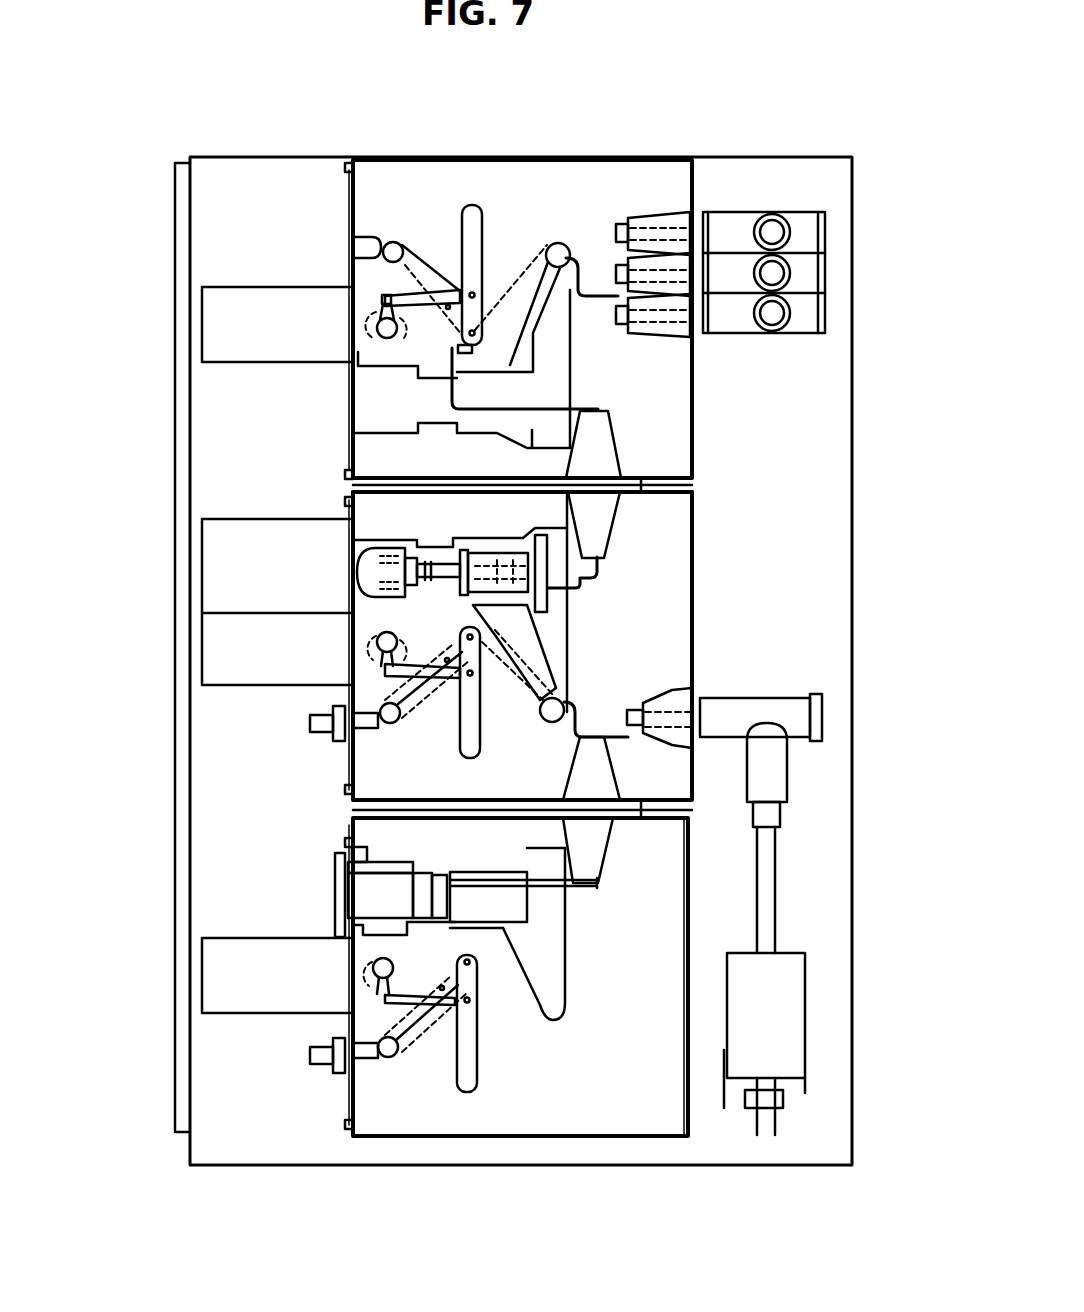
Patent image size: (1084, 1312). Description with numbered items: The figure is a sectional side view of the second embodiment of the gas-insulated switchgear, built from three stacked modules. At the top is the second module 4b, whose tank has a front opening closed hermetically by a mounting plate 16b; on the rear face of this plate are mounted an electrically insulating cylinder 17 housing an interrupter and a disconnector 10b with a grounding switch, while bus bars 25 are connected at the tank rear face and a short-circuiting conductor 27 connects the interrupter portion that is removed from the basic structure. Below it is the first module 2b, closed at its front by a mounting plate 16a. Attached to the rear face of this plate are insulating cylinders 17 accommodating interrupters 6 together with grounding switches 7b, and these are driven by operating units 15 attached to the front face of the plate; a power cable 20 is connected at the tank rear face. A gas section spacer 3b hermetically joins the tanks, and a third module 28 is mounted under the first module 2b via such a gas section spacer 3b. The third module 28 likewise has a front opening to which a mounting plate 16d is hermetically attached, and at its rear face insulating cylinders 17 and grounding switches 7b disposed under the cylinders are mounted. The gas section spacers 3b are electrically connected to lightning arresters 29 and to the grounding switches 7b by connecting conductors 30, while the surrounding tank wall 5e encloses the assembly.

The first module 2b is at (695, 640).
The gas section spacer 3b is at (693, 497).
The second module 4b is at (693, 437).
The third unit chamber 5e is at (702, 864).
The interrupter 6 is at (485, 552).
The grounding switch 7b is at (460, 755).
The disconnector with a grounding switch 10b is at (482, 233).
The operating unit 15 is at (233, 530).
The mounting plate 16a is at (350, 766).
The mounting plate 16b is at (350, 204).
The mounting plate 16d is at (330, 1099).
The electrically insulating cylinder 17 is at (386, 436).
The power cable 20 is at (775, 928).
The bus bar 25 is at (776, 212).
The short-circuiting conductor 27 is at (578, 410).
The third module 28 is at (702, 905).
The lightning arrester 29 is at (398, 865).
The connecting conductor 30 is at (590, 896).